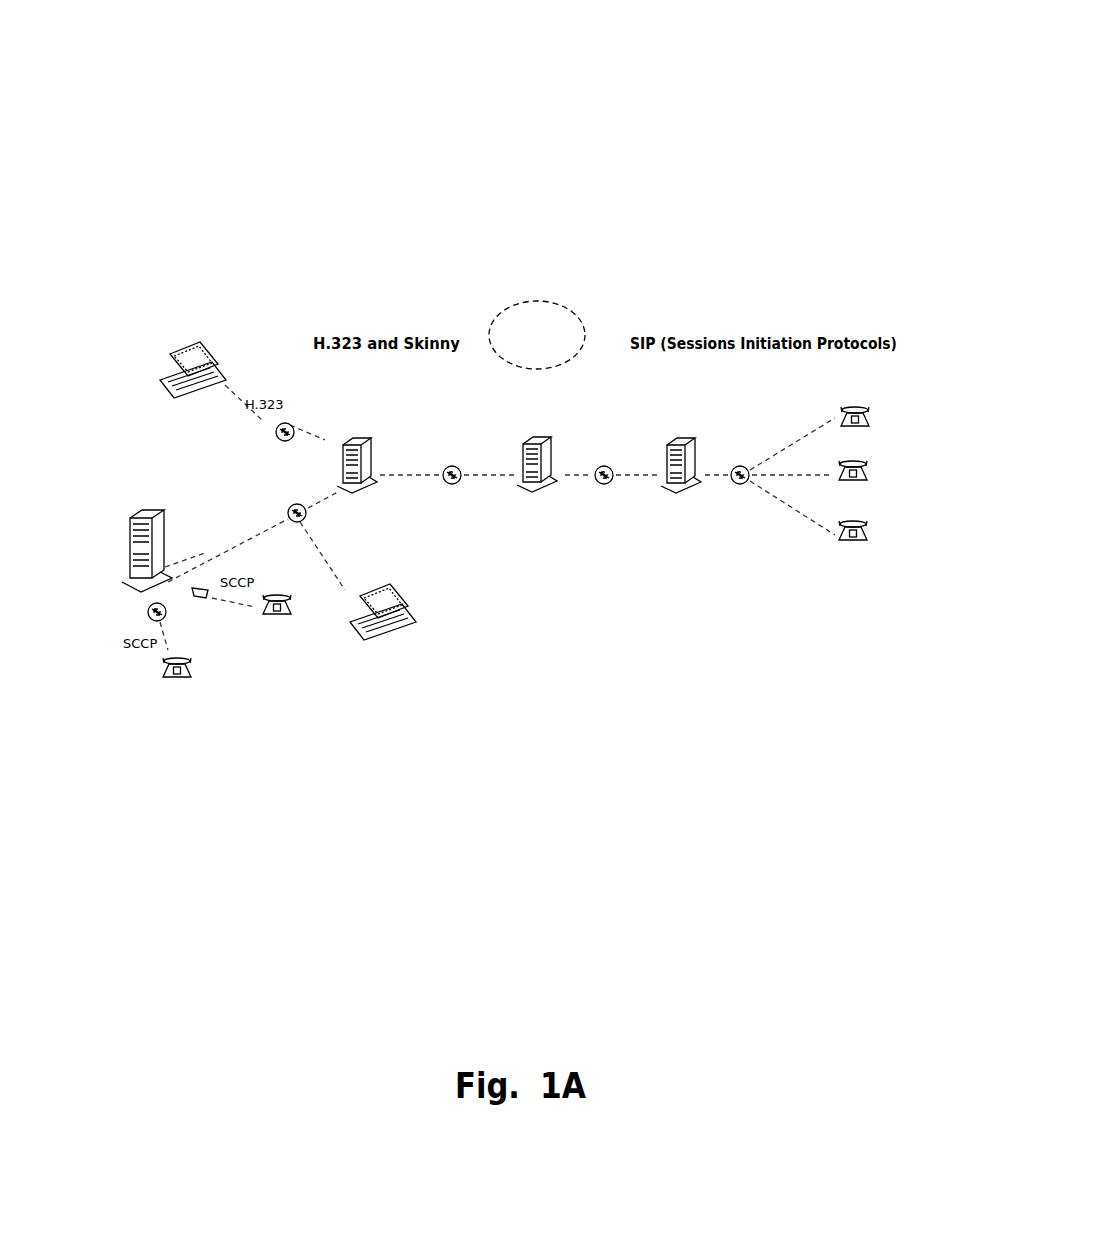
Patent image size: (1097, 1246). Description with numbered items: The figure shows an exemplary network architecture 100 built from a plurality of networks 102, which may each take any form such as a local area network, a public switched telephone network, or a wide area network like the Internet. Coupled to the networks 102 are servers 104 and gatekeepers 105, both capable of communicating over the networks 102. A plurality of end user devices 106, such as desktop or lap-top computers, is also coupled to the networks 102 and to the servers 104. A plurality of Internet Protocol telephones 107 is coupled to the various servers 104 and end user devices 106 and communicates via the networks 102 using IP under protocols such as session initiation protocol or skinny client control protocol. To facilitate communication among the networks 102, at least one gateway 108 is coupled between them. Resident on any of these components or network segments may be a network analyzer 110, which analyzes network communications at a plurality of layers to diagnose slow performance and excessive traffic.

The network architecture 100 is at (850, 188).
The networks 102 is at (470, 279).
The servers 104 is at (145, 520).
The gatekeepers 105 is at (352, 440).
The end user devices 106 is at (200, 338).
The Internet Protocol (IP) telephones 107 is at (870, 553).
The gateway 108 is at (557, 440).
The network analyzer 110 is at (298, 505).